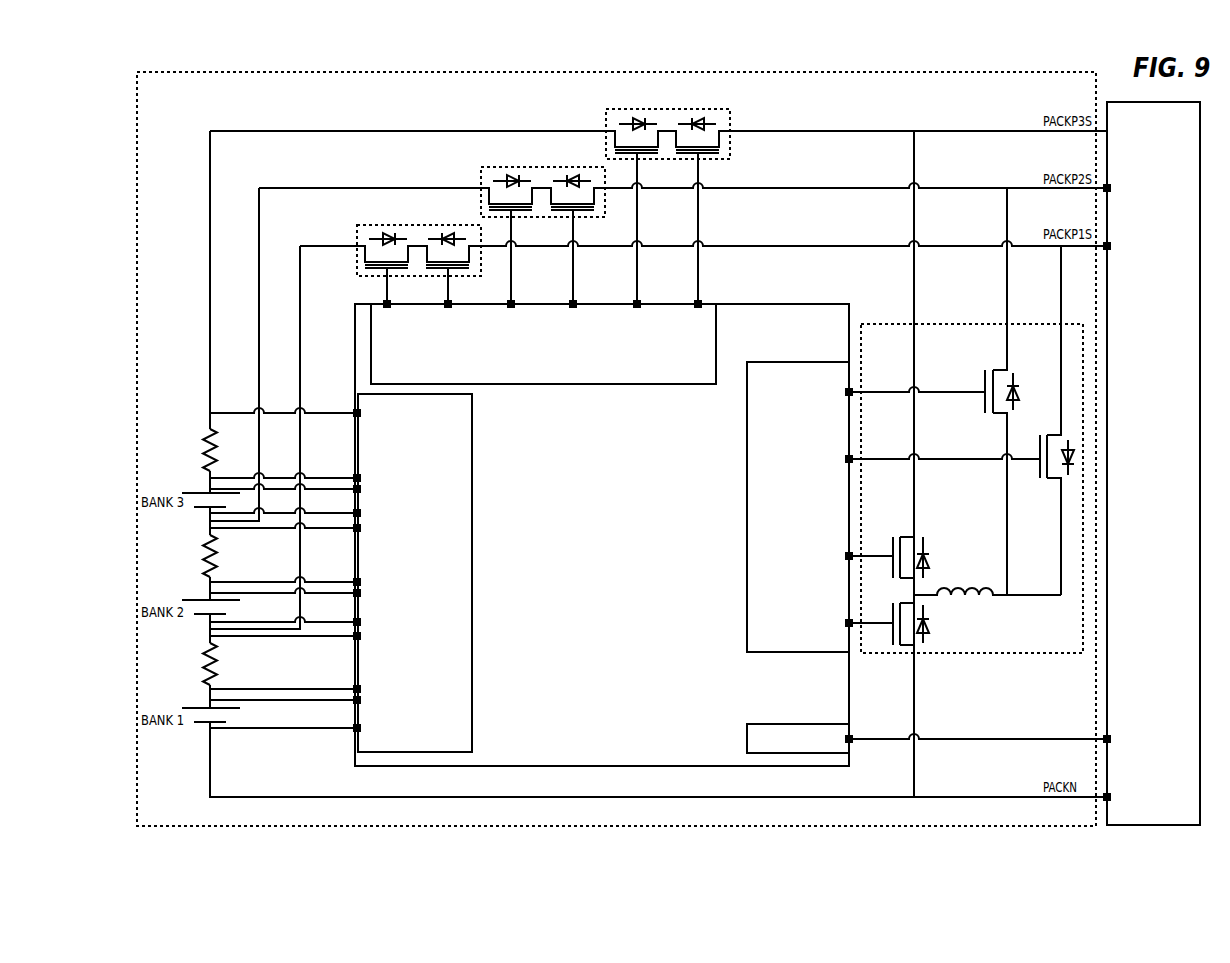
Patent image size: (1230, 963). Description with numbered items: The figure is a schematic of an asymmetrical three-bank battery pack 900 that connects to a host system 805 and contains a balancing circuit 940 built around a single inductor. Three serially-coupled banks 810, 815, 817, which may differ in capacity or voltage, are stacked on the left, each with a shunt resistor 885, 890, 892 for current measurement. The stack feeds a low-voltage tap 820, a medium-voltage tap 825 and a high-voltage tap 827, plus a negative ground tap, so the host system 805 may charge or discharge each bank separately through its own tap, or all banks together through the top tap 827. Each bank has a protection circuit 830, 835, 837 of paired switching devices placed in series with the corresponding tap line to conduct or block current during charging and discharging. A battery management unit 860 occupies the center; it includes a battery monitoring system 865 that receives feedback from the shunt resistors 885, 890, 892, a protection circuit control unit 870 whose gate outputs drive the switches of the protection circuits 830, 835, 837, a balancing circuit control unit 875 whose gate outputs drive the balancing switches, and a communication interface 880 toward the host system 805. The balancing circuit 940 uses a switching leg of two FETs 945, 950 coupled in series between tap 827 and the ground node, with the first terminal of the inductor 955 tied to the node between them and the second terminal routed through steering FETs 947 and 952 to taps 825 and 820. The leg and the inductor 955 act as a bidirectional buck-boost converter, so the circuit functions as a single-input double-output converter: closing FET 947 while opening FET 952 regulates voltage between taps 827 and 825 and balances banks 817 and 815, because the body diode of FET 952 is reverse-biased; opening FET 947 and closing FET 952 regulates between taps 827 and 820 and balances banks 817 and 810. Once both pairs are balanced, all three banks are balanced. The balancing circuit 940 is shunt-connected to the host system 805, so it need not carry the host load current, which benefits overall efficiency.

The battery pack 900 is at (190, 69).
The host system 805 is at (1153, 463).
The bank 810 is at (205, 706).
The bank 815 is at (205, 598).
The bank 817 is at (205, 490).
The low-voltage tap 820 is at (808, 240).
The medium-voltage tap 825 is at (808, 183).
The high-voltage tap 827 is at (808, 126).
The protection circuit 830 is at (361, 223).
The protection circuit 835 is at (484, 165).
The protection circuit 837 is at (608, 107).
The battery management unit 860 is at (602, 535).
The battery monitoring system 865 is at (412, 573).
The protection circuit control unit 870 is at (543, 342).
The balancing circuit control unit 875 is at (800, 507).
The communication interface 880 is at (753, 721).
The shunt resistor 885 is at (205, 658).
The shunt resistor 890 is at (205, 550).
The shunt resistor 892 is at (205, 443).
The balancing circuit 940 is at (906, 322).
The FET 945 is at (891, 539).
The FET 947 is at (992, 368).
The FET 950 is at (891, 606).
The FET 952 is at (1057, 432).
The inductor 955 is at (968, 582).